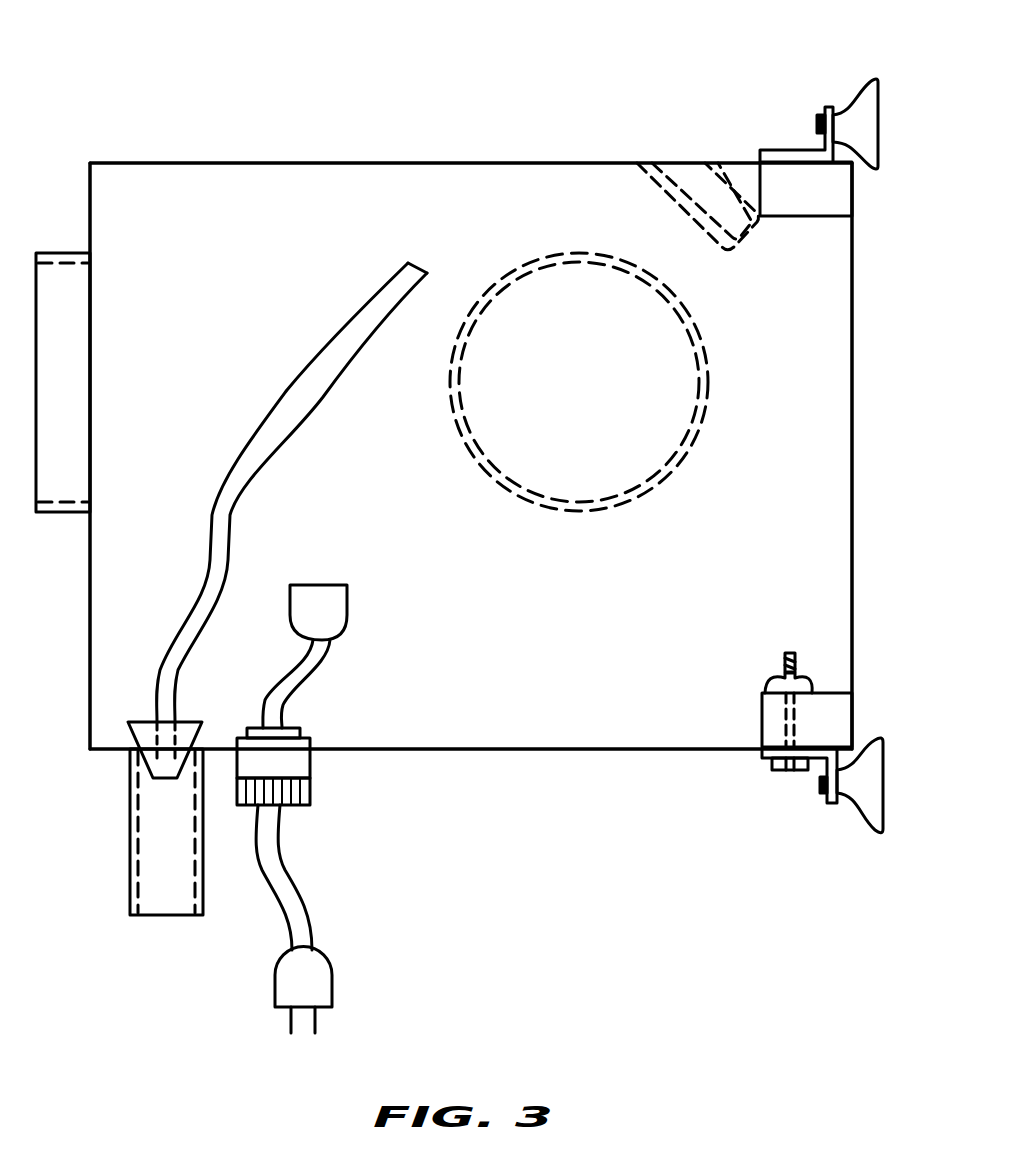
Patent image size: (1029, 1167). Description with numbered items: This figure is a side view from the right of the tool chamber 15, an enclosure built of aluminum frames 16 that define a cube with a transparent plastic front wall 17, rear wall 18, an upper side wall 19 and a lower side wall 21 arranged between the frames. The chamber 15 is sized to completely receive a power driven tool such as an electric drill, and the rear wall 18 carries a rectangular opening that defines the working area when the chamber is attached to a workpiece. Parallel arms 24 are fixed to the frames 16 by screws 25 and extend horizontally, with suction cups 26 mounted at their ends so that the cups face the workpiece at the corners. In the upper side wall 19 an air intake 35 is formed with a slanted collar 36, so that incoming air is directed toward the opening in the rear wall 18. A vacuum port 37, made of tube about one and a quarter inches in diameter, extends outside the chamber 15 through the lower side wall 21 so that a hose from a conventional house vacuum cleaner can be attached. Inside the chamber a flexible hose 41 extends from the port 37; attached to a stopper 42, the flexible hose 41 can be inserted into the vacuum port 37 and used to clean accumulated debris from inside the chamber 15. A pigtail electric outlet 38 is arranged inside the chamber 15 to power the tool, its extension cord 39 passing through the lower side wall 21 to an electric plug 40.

The tool chamber 15 is at (325, 88).
The aluminum frames 16 is at (823, 195).
The front wall 17 is at (88, 635).
The rear wall 18 is at (855, 473).
The upper side wall 19 is at (503, 162).
The lower side wall 21 is at (485, 750).
The parallel arms 24 is at (820, 142).
The screws 25 is at (783, 655).
The suction cups 26 is at (862, 96).
The air intake 35 is at (688, 180).
The slanted collar 36 is at (682, 208).
The vacuum port 37 is at (128, 838).
The pigtail electric outlet 38 is at (348, 600).
The extension cord 39 is at (312, 675).
The electric plug 40 is at (333, 984).
The flexible hose 41 is at (285, 388).
The stopper 42 is at (190, 718).